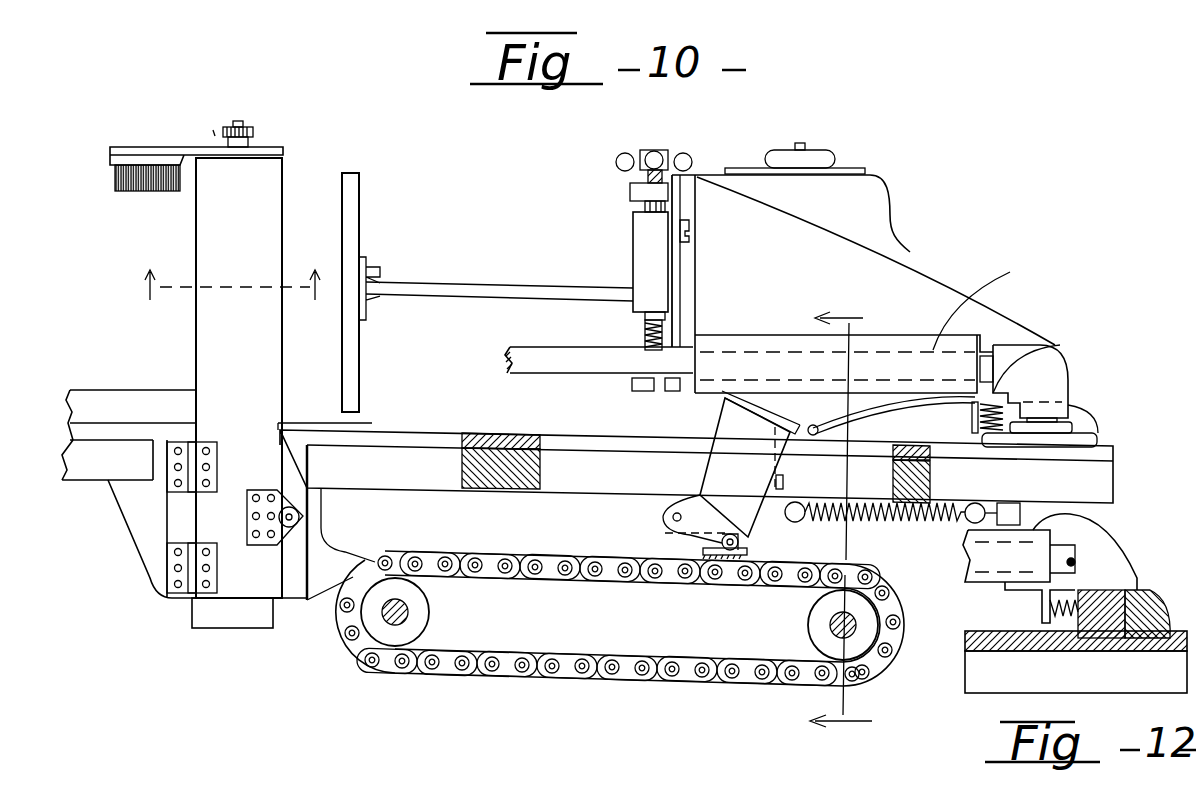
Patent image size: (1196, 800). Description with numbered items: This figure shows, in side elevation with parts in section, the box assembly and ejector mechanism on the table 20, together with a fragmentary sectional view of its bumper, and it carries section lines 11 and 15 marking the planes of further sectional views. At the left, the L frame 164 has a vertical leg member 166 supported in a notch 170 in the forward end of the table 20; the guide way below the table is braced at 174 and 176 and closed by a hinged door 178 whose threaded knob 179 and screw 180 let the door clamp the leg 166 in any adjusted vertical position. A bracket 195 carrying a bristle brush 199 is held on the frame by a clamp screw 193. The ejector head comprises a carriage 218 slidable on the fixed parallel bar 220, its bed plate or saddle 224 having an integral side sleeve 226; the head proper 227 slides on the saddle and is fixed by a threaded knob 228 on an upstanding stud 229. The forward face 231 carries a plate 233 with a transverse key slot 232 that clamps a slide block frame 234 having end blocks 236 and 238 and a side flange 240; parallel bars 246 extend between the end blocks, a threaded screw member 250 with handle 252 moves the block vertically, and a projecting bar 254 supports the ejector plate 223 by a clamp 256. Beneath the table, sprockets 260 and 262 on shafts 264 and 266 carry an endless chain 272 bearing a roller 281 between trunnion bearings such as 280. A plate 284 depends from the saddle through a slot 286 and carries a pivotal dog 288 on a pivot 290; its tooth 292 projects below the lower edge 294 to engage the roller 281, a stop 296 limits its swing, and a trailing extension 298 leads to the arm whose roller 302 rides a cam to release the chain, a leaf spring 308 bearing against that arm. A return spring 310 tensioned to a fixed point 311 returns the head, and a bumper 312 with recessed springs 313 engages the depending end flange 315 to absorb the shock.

In FIG. 10, the table 20 is at (78, 432).
In FIG. 12, the table 20 is at (965, 640).
In FIG. 10, the section line for the fragmentary view 11 is at (856, 518).
In FIG. 10, the section line 15 is at (229, 298).
In FIG. 10, the L frame 164 is at (263, 157).
In FIG. 10, the vertical leg member 166 is at (207, 228).
In FIG. 10, the notch 170 is at (278, 447).
In FIG. 10, the brace 174 is at (321, 516).
In FIG. 10, the brace 176 is at (142, 545).
In FIG. 10, the hinged door 178 is at (232, 572).
In FIG. 10, the threaded knob 179 is at (306, 490).
In FIG. 10, the screw 180 is at (300, 508).
In FIG. 10, the clamp screw 193 is at (248, 127).
In FIG. 10, the bracket 195 is at (210, 147).
In FIG. 10, the bristle brush 199 is at (113, 176).
In FIG. 10, the carriage 218 is at (917, 262).
In FIG. 10, the parallel bar 220 is at (517, 350).
In FIG. 10, the ejector plate 223 is at (360, 208).
In FIG. 10, the bed plate or saddle 224 is at (745, 380).
In FIG. 10, the side sleeve 226 is at (986, 299).
In FIG. 10, the head proper 227 is at (838, 193).
In FIG. 10, the threaded knob 228 is at (836, 158).
In FIG. 10, the upstanding stud 229 is at (806, 143).
In FIG. 10, the forward face of the head 231 is at (690, 259).
In FIG. 10, the transverse key slot 232 is at (693, 232).
In FIG. 10, the plate 233 is at (685, 283).
In FIG. 10, the frame 234 is at (640, 235).
In FIG. 10, the end block 236 is at (634, 190).
In FIG. 10, the end block 238 is at (632, 382).
In FIG. 10, the side flange 240 is at (670, 260).
In FIG. 10, the parallel bars 246 is at (645, 206).
In FIG. 10, the threaded screw member 250 is at (645, 330).
In FIG. 10, the handle 252 is at (630, 154).
In FIG. 10, the projecting bar 254 is at (450, 284).
In FIG. 10, the clamp 256 is at (373, 266).
In FIG. 10, the sprocket 260 is at (432, 578).
In FIG. 10, the sprocket 262 is at (806, 613).
In FIG. 10, the shaft 264 is at (408, 612).
In FIG. 10, the shaft 266 is at (830, 625).
In FIG. 10, the endless chain 272 is at (628, 672).
In FIG. 10, the trunnion bearing 280 is at (747, 551).
In FIG. 10, the roller 281 is at (730, 534).
In FIG. 10, the plate 284 is at (733, 383).
In FIG. 10, the slot 286 is at (548, 444).
In FIG. 10, the pivotal dog 288 is at (713, 468).
In FIG. 10, the pivot 290 is at (673, 515).
In FIG. 10, the tooth 292 is at (700, 536).
In FIG. 10, the lower edge 294 is at (783, 518).
In FIG. 10, the stop 296 is at (786, 478).
In FIG. 10, the trailing extension 298 is at (812, 426).
In FIG. 10, the roller 302 is at (896, 402).
In FIG. 10, the leaf spring 308 is at (895, 418).
In FIG. 10, the return spring 310 is at (862, 521).
In FIG. 10, the fixed point 311 is at (1022, 512).
In FIG. 10, the bumper 312 is at (1087, 417).
In FIG. 10, the springs 313 is at (1000, 378).
In FIG. 12, the springs 313 is at (1128, 592).
In FIG. 10, the depending end flange 315 is at (950, 443).